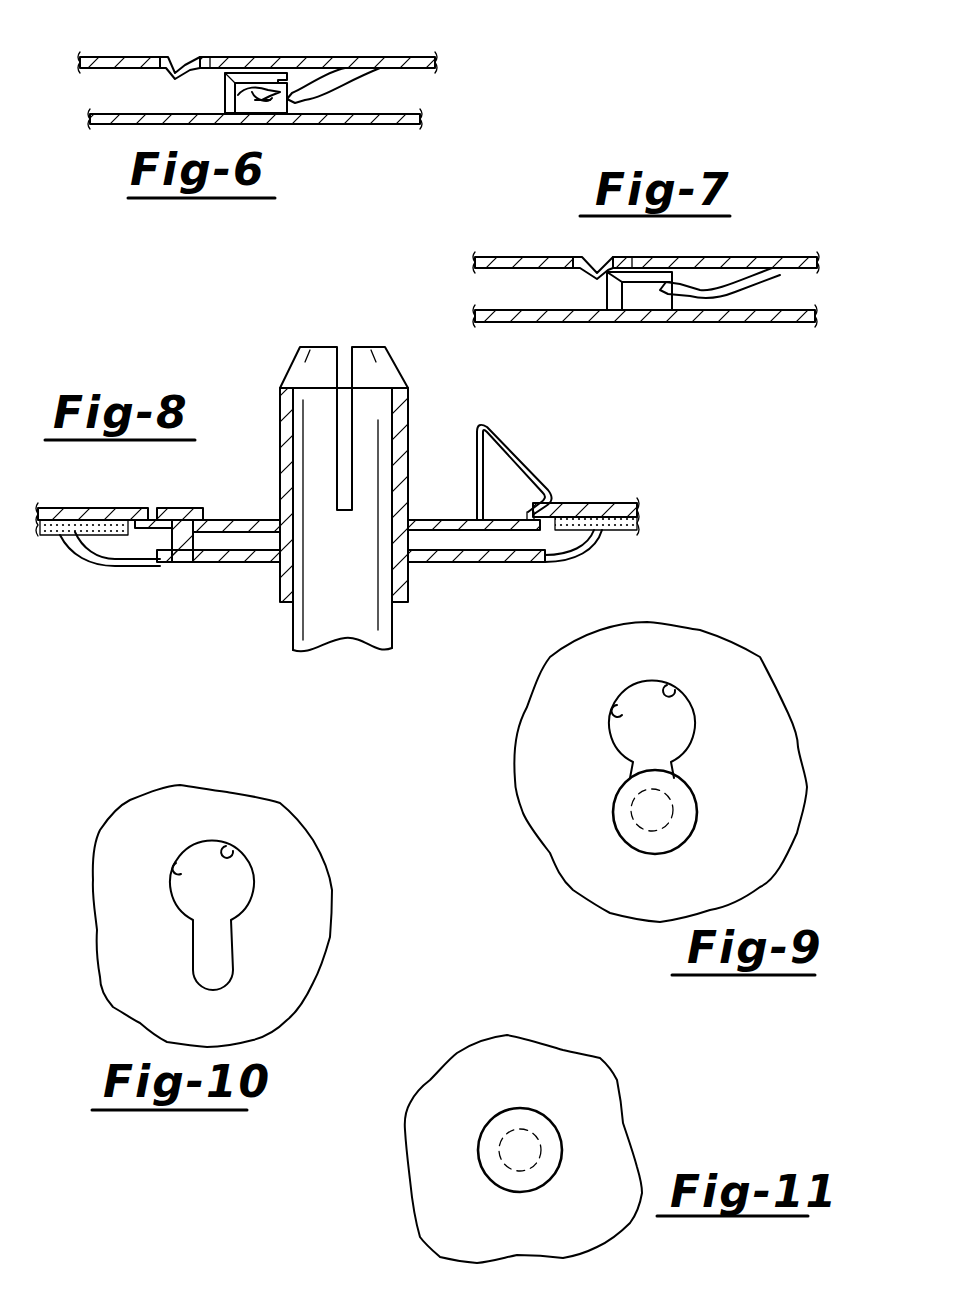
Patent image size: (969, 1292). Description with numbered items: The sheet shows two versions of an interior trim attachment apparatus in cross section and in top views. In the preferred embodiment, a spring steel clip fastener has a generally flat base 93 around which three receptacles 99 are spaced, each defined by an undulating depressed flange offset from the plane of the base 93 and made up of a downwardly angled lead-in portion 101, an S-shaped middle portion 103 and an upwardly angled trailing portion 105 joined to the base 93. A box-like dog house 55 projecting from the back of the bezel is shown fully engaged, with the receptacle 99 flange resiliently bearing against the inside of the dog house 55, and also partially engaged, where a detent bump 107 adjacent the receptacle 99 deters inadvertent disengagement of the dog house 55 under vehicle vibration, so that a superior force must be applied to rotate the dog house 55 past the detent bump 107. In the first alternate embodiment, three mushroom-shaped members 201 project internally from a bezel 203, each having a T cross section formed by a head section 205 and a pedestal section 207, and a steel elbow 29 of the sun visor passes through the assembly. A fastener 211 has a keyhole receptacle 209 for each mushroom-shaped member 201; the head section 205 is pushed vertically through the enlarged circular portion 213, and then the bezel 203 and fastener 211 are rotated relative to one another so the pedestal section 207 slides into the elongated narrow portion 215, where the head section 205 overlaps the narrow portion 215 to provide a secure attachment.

In FIG. 8, the elbow 29 is at (295, 626).
In FIG. 6, the dog house 55 is at (291, 112).
In FIG. 7, the dog house 55 is at (640, 312).
In FIG. 6, the base 93 is at (400, 60).
In FIG. 7, the base 93 is at (646, 289).
In FIG. 7, the receptacle 99 is at (708, 278).
In FIG. 6, the lead-in portion 101 is at (244, 104).
In FIG. 6, the middle portion 103 is at (276, 90).
In FIG. 6, the trailing portion 105 is at (318, 78).
In FIG. 6, the detent bump 107 is at (177, 66).
In FIG. 7, the detent bump 107 is at (578, 271).
In FIG. 8, the mushroom-shaped member 201 is at (177, 548).
In FIG. 9, the mushroom-shaped member 201 is at (690, 782).
In FIG. 11, the mushroom-shaped member 201 is at (500, 1108).
In FIG. 8, the bezel 203 is at (113, 558).
In FIG. 11, the bezel 203 is at (438, 1218).
In FIG. 8, the head section 205 is at (184, 516).
In FIG. 9, the head section 205 is at (617, 818).
In FIG. 11, the head section 205 is at (535, 1123).
In FIG. 8, the pedestal section 207 is at (195, 545).
In FIG. 9, the pedestal section 207 is at (647, 822).
In FIG. 11, the pedestal section 207 is at (500, 1153).
In FIG. 8, the keyhole receptacle 209 is at (178, 510).
In FIG. 9, the keyhole receptacle 209 is at (670, 690).
In FIG. 10, the keyhole receptacle 209 is at (176, 870).
In FIG. 8, the fastener 211 is at (425, 518).
In FIG. 9, the fastener 211 is at (652, 729).
In FIG. 10, the fastener 211 is at (300, 830).
In FIG. 9, the enlarged circular portion 213 is at (620, 714).
In FIG. 10, the enlarged circular portion 213 is at (230, 850).
In FIG. 9, the elongated narrow portion 215 is at (633, 793).
In FIG. 10, the elongated narrow portion 215 is at (196, 955).